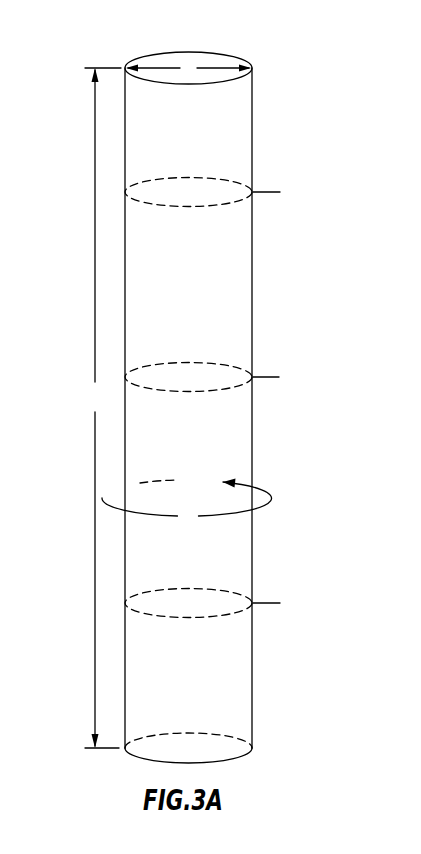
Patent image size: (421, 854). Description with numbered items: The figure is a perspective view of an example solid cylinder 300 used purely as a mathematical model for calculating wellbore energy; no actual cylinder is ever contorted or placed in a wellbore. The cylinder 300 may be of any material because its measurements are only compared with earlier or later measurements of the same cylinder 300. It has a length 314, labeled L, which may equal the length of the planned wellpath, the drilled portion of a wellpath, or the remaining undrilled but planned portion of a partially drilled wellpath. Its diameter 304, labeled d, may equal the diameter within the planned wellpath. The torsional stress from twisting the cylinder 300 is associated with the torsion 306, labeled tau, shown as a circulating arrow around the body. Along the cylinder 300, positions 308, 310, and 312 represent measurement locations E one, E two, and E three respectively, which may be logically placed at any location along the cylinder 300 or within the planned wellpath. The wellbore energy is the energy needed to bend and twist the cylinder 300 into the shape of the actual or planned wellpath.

The solid cylinder 300 is at (280, 108).
The diameter d 304 is at (220, 66).
The torsion τ 306 is at (273, 493).
The measurement location E1 308 is at (302, 184).
The measurement location E2 310 is at (301, 368).
The measurement location E3 312 is at (300, 597).
The length L 314 is at (87, 392).